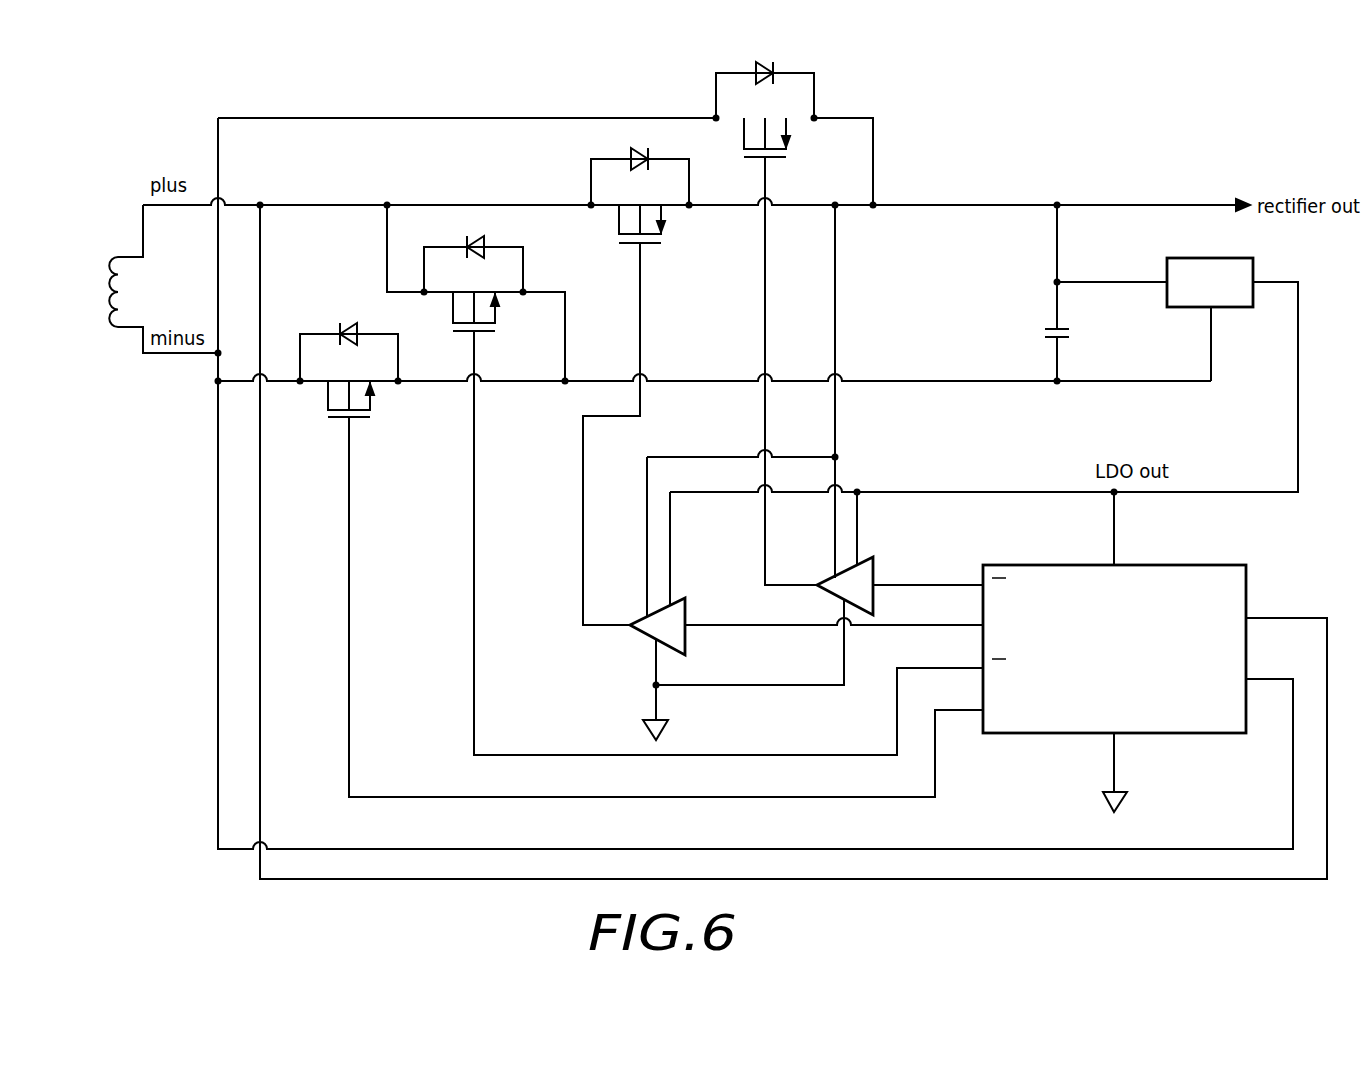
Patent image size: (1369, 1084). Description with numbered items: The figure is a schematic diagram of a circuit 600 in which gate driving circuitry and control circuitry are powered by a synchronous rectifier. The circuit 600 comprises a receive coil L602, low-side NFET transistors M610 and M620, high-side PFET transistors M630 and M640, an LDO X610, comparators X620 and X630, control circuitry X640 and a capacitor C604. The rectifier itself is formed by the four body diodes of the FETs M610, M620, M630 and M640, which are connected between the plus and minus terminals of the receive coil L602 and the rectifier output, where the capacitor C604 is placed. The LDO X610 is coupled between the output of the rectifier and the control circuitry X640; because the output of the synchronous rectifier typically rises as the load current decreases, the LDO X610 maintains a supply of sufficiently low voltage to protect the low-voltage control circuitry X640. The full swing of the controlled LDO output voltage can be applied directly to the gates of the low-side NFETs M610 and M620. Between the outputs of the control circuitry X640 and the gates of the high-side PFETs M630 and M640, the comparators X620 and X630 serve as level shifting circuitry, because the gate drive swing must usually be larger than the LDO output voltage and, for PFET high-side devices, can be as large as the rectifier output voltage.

The circuit 600 is at (1145, 102).
The receive coil L602 is at (127, 279).
The NFET transistor M610 is at (641, 560).
The NFET transistor M620 is at (685, 480).
The PFET transistor M630 is at (650, 386).
The PFET transistor M640 is at (779, 323).
The capacitor C604 is at (1081, 293).
The LDO X610 is at (1253, 268).
The comparator X620 is at (645, 634).
The comparator X630 is at (874, 565).
The control circuitry X640 is at (1246, 585).